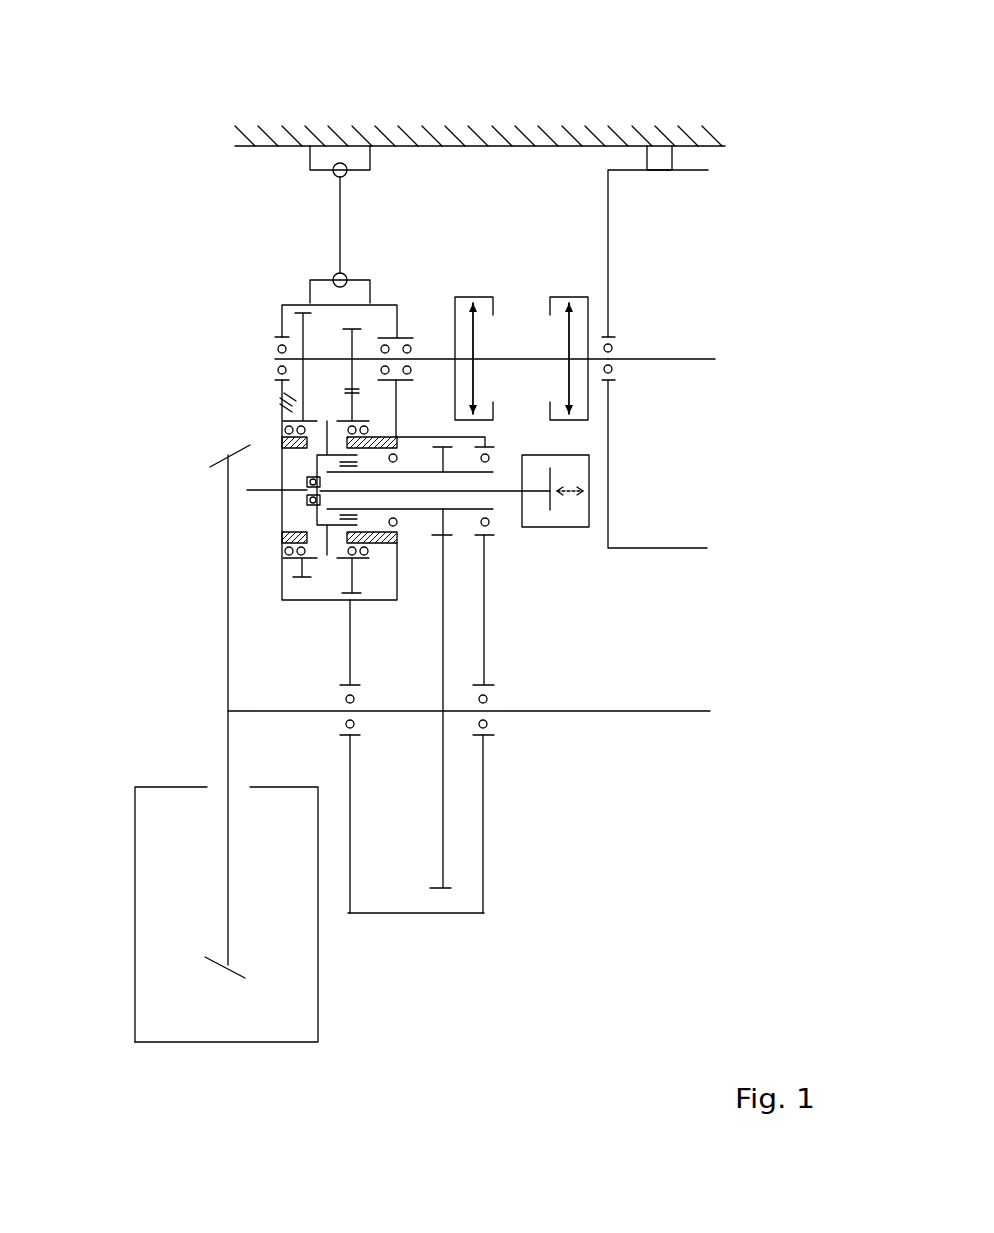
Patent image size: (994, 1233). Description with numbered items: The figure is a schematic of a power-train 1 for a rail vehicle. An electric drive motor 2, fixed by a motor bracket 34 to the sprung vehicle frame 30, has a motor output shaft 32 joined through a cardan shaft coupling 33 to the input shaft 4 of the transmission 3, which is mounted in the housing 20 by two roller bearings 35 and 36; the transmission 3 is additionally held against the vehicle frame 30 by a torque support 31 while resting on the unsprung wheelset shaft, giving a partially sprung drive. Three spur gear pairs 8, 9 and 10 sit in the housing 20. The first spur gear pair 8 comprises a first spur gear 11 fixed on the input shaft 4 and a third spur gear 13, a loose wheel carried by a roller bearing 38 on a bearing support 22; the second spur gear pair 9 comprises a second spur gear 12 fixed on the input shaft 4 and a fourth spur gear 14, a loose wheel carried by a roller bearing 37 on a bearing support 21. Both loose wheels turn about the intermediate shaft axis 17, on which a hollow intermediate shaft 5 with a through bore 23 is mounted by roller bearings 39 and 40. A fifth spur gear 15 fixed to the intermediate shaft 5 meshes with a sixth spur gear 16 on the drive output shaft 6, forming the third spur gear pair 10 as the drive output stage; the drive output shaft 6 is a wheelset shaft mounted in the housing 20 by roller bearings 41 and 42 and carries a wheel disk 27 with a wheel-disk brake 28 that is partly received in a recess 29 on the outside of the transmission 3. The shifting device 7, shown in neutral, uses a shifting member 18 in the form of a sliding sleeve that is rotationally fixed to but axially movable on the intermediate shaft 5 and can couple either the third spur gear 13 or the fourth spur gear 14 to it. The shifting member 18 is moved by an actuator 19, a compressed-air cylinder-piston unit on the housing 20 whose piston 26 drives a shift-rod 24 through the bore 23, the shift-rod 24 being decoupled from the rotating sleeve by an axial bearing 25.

The power-train 1 is at (162, 130).
The electric drive motor 2 is at (652, 530).
The transmission 3 is at (257, 338).
The input shaft 4 is at (438, 359).
The intermediate shaft 5 is at (462, 514).
The drive output shaft 6 is at (454, 514).
The shifting device 7 is at (303, 474).
The first spur gear pair 8 is at (362, 343).
The second spur gear pair 9 is at (350, 410).
The third spur gear pair 10 is at (433, 642).
The first spur gear 11 is at (307, 282).
The second spur gear 12 is at (282, 306).
The third spur gear 13 is at (292, 400).
The fourth spur gear 14 is at (300, 409).
The fifth spur gear 15 is at (486, 545).
The sixth spur gear 16 is at (444, 796).
The intermediate shaft axis 17 is at (300, 497).
The shifting member 18 is at (290, 463).
The actuator 19 is at (545, 490).
The housing 20 is at (435, 913).
The bearing support 21 is at (283, 553).
The bearing support 22 is at (397, 548).
The bore 23 is at (510, 502).
The shift-rod 24 is at (498, 500).
The axial bearing 25 is at (260, 490).
The piston 26 is at (552, 492).
The wheel disk 27 is at (227, 798).
The wheel-disk brake 28 is at (245, 1042).
The recess 29 is at (229, 752).
The vehicle frame 30 is at (283, 146).
The torque support 31 is at (338, 230).
The motor output shaft 32 is at (690, 362).
The cardan shaft coupling 33 is at (507, 359).
The motor bracket 34 is at (643, 160).
The roller bearing 35 is at (413, 345).
The roller bearing 36 is at (277, 348).
The roller bearing 37 is at (347, 516).
The roller bearing 38 is at (343, 698).
The roller bearing 39 is at (490, 455).
The roller bearing 40 is at (398, 456).
The roller bearing 41 is at (488, 728).
The roller bearing 42 is at (290, 745).